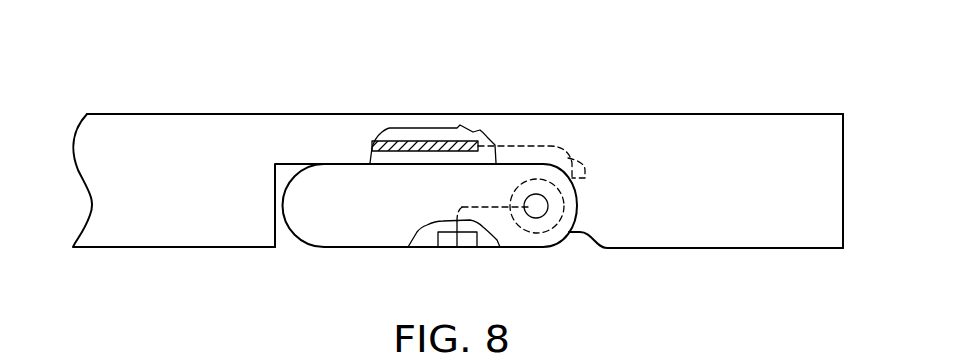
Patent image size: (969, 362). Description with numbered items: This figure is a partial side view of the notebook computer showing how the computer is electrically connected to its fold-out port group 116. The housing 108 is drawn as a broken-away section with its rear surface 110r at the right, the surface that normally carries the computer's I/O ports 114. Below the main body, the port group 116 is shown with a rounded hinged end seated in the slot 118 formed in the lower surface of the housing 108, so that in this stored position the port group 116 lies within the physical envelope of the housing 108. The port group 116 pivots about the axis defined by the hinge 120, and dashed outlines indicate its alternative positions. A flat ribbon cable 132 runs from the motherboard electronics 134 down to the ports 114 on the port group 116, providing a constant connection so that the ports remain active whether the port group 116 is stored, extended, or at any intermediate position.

The housing 108 is at (613, 113).
The rear surface 110r is at (843, 182).
The I/O ports 114 is at (450, 242).
The fold-out port group 116 is at (350, 247).
The slot 118 is at (283, 242).
The hinge 120 is at (545, 232).
The flat ribbon cable 132 is at (555, 200).
The motherboard electronics 134 is at (438, 140).